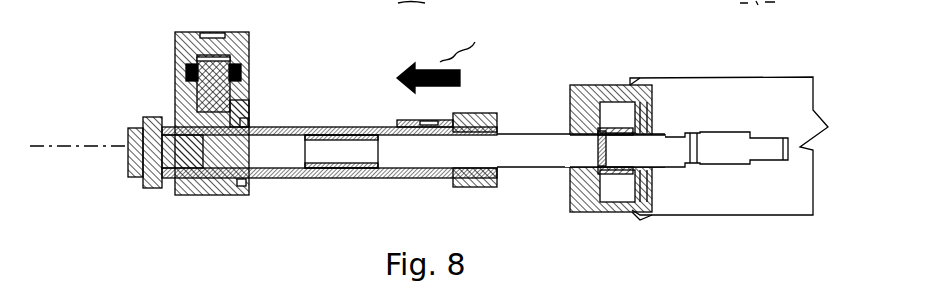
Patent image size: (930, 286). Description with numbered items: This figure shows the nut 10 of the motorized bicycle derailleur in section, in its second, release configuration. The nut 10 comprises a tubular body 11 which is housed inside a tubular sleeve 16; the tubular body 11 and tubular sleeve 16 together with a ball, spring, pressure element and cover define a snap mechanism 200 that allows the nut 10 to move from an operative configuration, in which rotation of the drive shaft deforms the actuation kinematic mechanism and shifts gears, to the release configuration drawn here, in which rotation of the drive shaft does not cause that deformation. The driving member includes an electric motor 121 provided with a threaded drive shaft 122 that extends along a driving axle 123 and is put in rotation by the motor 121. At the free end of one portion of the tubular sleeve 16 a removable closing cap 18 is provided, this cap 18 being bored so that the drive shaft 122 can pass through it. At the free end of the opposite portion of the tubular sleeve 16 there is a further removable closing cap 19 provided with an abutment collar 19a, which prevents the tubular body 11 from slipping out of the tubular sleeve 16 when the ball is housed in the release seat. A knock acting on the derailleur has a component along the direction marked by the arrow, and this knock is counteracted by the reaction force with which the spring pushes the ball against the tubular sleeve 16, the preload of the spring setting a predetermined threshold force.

The nut 10 is at (311, 140).
The tubular body 11 is at (254, 94).
The tubular sleeve 16 is at (341, 188).
The removable closing cap 18 is at (499, 129).
The removable closing cap 19 is at (122, 146).
The abutment collar 19a is at (168, 118).
The electric motor 121 is at (755, 190).
The threaded drive shaft 122 is at (530, 148).
The driving axle 123 is at (60, 148).
The snap mechanism 200 is at (256, 62).